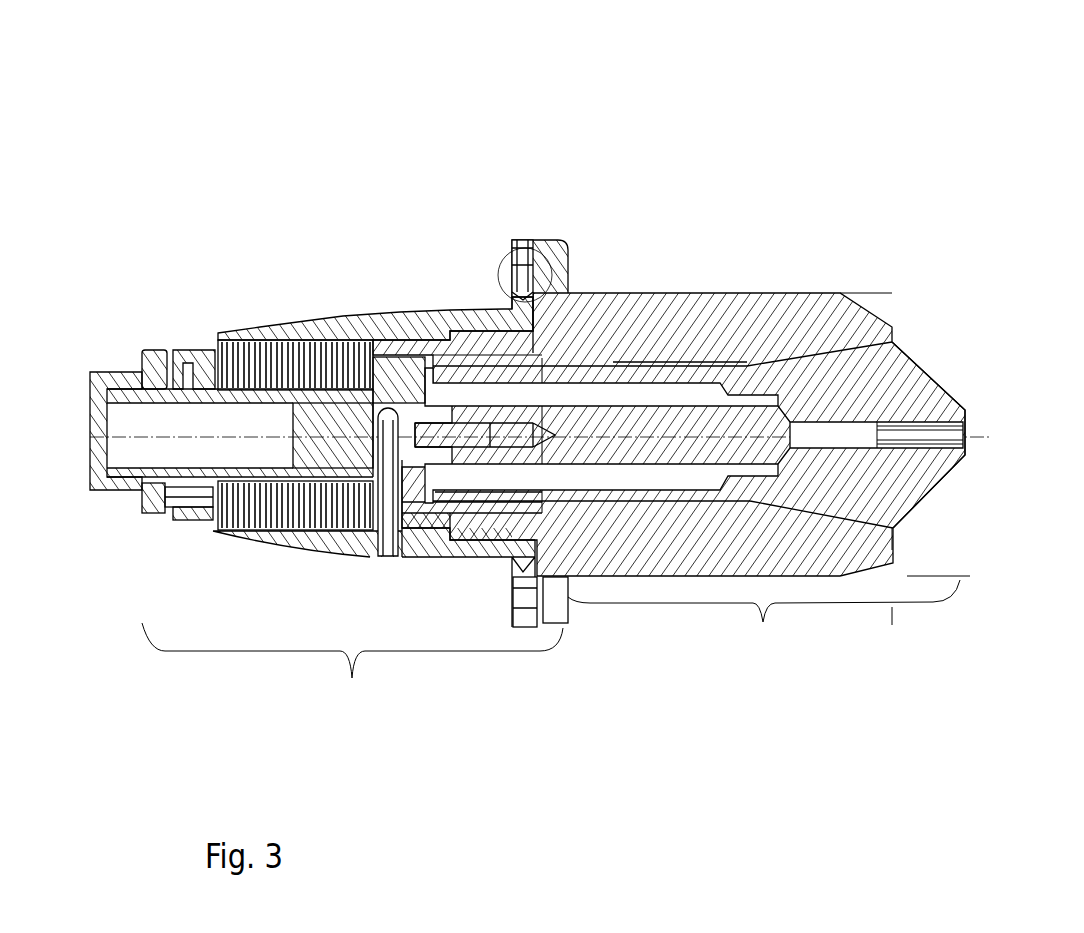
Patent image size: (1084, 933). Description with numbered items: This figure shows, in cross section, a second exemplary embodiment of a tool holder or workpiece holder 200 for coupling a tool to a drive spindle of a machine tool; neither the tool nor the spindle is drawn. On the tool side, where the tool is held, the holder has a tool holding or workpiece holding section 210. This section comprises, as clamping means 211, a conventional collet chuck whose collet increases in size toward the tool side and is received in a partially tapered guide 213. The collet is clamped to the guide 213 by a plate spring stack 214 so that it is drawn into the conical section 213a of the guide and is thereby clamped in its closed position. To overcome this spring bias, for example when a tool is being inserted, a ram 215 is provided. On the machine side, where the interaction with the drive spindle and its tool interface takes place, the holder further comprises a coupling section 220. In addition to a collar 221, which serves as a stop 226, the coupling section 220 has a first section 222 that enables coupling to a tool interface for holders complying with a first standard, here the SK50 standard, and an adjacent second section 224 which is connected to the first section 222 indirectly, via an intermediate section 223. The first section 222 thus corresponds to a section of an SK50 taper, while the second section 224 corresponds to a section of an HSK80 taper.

The tool holder or workpiece holder 200 is at (542, 393).
The tool holding or workpiece holding section 210 is at (671, 443).
The clamping means 211 is at (914, 350).
The guide 213 is at (690, 319).
The conical section 213a is at (780, 367).
The plate spring stack 214 is at (305, 332).
The ram 215 is at (812, 298).
The coupling section 220 is at (310, 456).
The collar 221 is at (538, 627).
The first section 222 is at (257, 542).
The intermediate section 223 is at (370, 555).
The second section 224 is at (455, 558).
The stop 226 is at (512, 245).